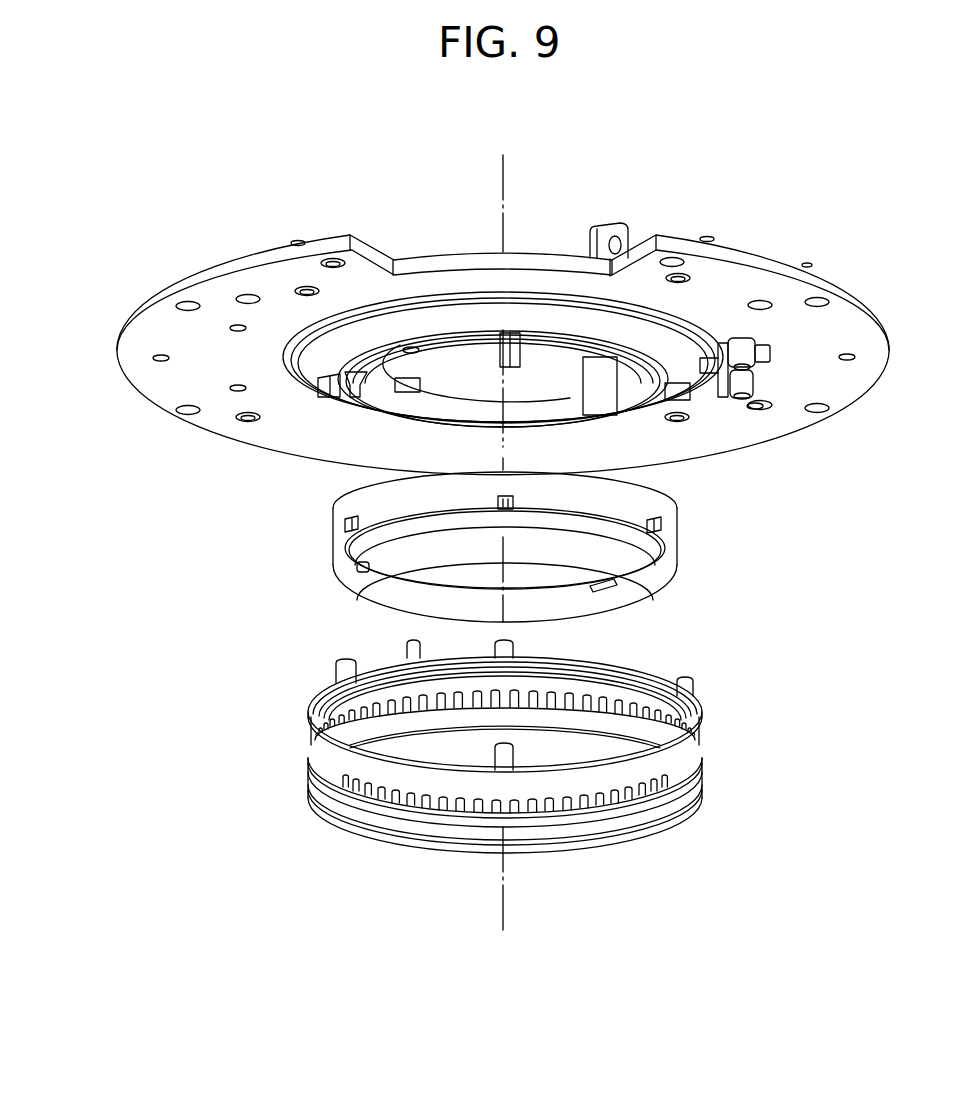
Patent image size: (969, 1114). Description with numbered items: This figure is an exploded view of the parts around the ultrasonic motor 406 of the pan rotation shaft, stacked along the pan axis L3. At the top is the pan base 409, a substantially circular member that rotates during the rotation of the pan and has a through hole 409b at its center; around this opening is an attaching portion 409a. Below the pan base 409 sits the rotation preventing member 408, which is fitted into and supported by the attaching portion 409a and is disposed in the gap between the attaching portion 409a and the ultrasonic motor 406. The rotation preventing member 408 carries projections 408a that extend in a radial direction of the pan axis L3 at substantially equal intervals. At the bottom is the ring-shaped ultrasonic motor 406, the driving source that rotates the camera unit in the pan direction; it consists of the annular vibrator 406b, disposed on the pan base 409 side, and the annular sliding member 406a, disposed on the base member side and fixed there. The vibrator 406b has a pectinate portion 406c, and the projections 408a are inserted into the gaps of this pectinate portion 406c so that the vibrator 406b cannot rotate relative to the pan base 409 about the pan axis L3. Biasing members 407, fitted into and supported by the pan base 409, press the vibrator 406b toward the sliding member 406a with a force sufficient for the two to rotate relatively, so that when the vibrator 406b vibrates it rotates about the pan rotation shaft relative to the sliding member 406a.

The ultrasonic motor 406 is at (389, 735).
The sliding member 406a is at (362, 739).
The vibrator 406b is at (362, 737).
The pectinate portion 406c is at (407, 698).
The biasing member 407 is at (700, 710).
The rotation preventing member 408 is at (647, 505).
The projections 408a is at (656, 524).
The pan base 409 is at (172, 334).
The attaching portion 409a is at (350, 350).
The through hole 409b is at (409, 372).
The pan axis L3 is at (504, 564).